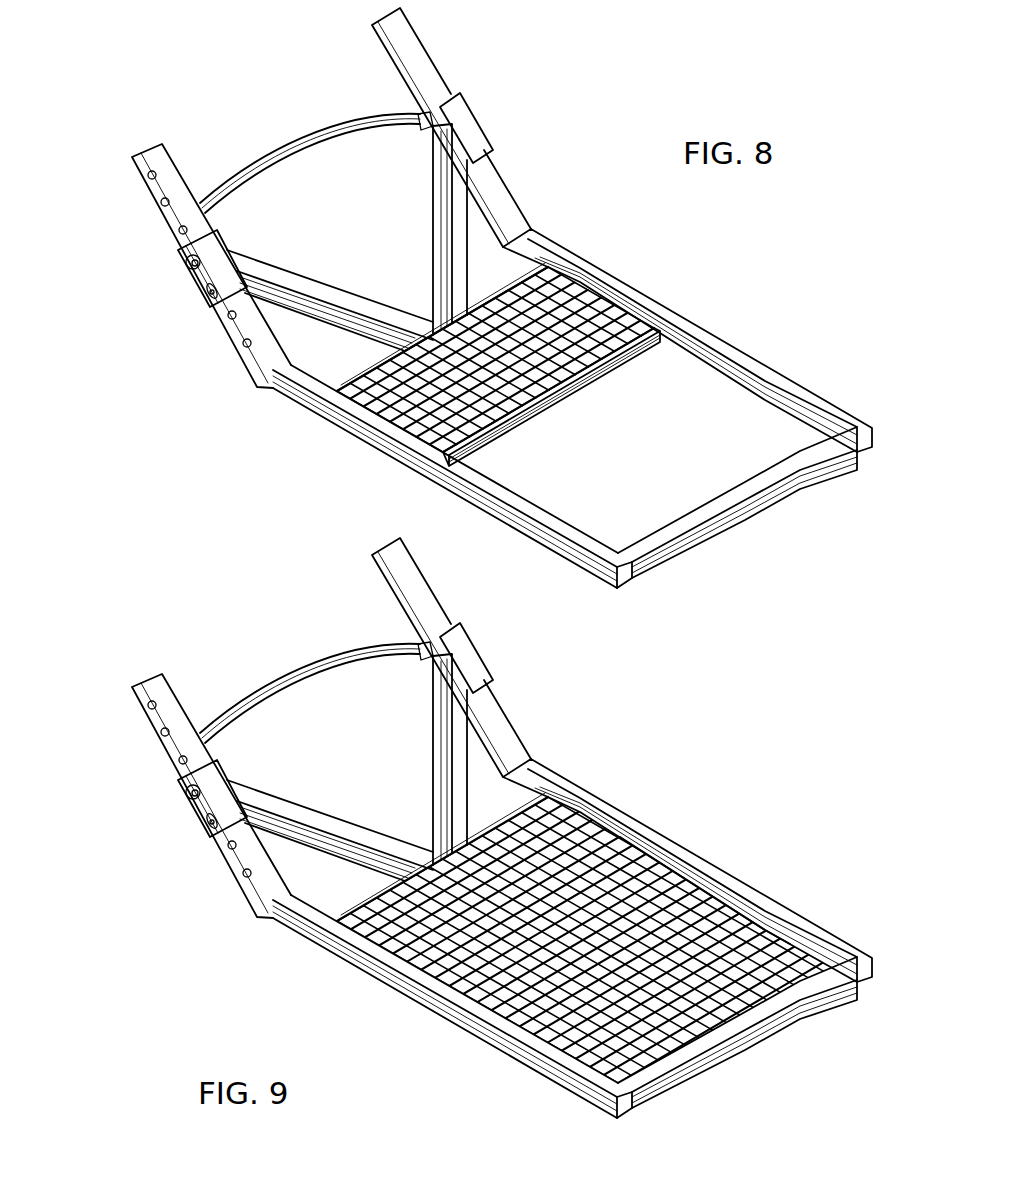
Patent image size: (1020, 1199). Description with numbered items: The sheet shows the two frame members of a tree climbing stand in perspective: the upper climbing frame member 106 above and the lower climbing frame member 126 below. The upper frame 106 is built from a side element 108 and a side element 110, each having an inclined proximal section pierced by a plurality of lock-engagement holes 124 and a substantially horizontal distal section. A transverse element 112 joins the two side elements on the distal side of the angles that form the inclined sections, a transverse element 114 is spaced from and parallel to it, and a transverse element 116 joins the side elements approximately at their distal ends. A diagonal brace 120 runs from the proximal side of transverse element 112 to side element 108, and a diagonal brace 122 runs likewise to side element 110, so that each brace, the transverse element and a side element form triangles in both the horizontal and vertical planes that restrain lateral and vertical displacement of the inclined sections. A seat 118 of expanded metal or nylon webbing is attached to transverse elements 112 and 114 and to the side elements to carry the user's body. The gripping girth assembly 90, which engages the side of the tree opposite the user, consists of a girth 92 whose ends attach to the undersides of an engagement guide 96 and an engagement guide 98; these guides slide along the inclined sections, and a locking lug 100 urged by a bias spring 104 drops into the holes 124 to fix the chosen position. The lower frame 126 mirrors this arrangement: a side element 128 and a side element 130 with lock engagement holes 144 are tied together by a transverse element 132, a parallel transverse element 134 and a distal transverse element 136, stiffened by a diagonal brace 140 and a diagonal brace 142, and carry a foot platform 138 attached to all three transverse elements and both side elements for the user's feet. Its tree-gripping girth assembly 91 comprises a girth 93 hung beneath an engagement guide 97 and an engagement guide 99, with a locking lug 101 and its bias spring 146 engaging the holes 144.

In FIG. 8, the gripping girth assembly 90 is at (314, 121).
In FIG. 9, the tree-gripping girth assembly 91 is at (291, 605).
In FIG. 8, the girth 92 is at (243, 160).
In FIG. 9, the girth 93 is at (307, 680).
In FIG. 8, the engagement guide 96 is at (208, 298).
In FIG. 9, the engagement guide 97 is at (200, 796).
In FIG. 8, the engagement guide 98 is at (475, 113).
In FIG. 9, the engagement guide 99 is at (496, 647).
In FIG. 8, the locking lug 100 is at (183, 263).
In FIG. 9, the locking lug 101 is at (142, 797).
In FIG. 8, the bias spring 104 is at (200, 283).
In FIG. 9, the bias spring 146 is at (158, 829).
In FIG. 8, the upper climbing frame member 106 is at (580, 378).
In FIG. 9, the lower climbing frame member 126 is at (582, 939).
In FIG. 8, the side element 108 is at (493, 480).
In FIG. 9, the side element 128 is at (445, 1006).
In FIG. 8, the side element 110 is at (782, 412).
In FIG. 9, the side element 130 is at (687, 870).
In FIG. 8, the transverse element 112 is at (542, 268).
In FIG. 9, the transverse element 132 is at (472, 820).
In FIG. 8, the transverse element 114 is at (628, 369).
In FIG. 8, the transverse element 116 is at (654, 534).
In FIG. 9, the transverse element 136 is at (737, 1058).
In FIG. 8, the seat 118 is at (590, 284).
In FIG. 9, the foot platform 138 is at (600, 916).
In FIG. 9, the transverse element 134 is at (706, 876).
In FIG. 8, the diagonal brace 120 is at (322, 280).
In FIG. 9, the diagonal brace 140 is at (330, 817).
In FIG. 8, the diagonal brace 122 is at (430, 263).
In FIG. 9, the diagonal brace 142 is at (404, 759).
In FIG. 8, the lock-engagement holes 124 is at (243, 342).
In FIG. 9, the lock engagement holes 144 is at (132, 789).